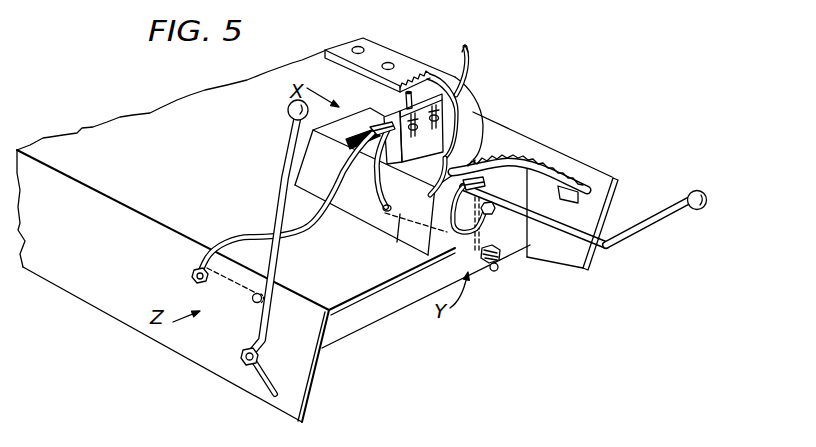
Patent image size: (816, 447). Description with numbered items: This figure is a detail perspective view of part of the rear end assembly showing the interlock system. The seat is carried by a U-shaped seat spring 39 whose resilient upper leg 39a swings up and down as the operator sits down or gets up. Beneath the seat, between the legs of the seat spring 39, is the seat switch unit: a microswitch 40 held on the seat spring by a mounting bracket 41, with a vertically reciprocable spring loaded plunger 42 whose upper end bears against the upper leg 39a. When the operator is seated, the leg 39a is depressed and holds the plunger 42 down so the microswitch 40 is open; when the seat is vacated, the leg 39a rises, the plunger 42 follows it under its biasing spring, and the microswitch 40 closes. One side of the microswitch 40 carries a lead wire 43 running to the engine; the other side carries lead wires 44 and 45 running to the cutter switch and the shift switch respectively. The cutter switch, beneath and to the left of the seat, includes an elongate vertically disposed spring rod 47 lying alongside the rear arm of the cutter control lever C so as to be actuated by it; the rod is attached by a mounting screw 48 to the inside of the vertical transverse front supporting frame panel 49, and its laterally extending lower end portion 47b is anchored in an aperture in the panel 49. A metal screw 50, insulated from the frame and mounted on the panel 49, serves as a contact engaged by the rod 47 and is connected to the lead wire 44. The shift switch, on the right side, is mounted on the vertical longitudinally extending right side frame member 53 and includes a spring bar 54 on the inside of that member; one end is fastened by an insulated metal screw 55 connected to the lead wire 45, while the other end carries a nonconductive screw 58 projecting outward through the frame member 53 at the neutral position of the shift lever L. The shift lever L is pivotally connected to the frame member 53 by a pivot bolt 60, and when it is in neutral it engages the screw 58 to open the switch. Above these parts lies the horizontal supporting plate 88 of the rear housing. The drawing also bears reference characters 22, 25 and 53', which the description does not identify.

The horizontal supporting plate 88 is at (314, 180).
The right side frame member 53 is at (162, 344).
The side wall 53' is at (572, 234).
The front supporting frame panel 49 is at (398, 313).
The spring bar 54 is at (236, 292).
The microswitch 40 is at (398, 111).
The mounting bracket 41 is at (424, 131).
The spring loaded plunger 42 is at (420, 96).
The upper leg of seat spring 39a is at (382, 47).
The U-shaped seat spring 39 is at (476, 95).
The lead wire 43 is at (471, 59).
The lead wire 45 is at (250, 234).
The lead wire 44 is at (377, 204).
The shift lever L is at (281, 161).
The metal screw 55 is at (193, 276).
The nonconductive screw 58 is at (254, 304).
The pivot bolt 60 is at (242, 361).
The crank rod 22 is at (584, 226).
The cutter control lever C is at (652, 233).
The flexible cable 25 is at (558, 188).
The spring rod 47 is at (487, 176).
The metal contact screw 50 is at (491, 215).
The mounting screw 48 is at (500, 259).
The laterally extending portion 47b is at (497, 270).